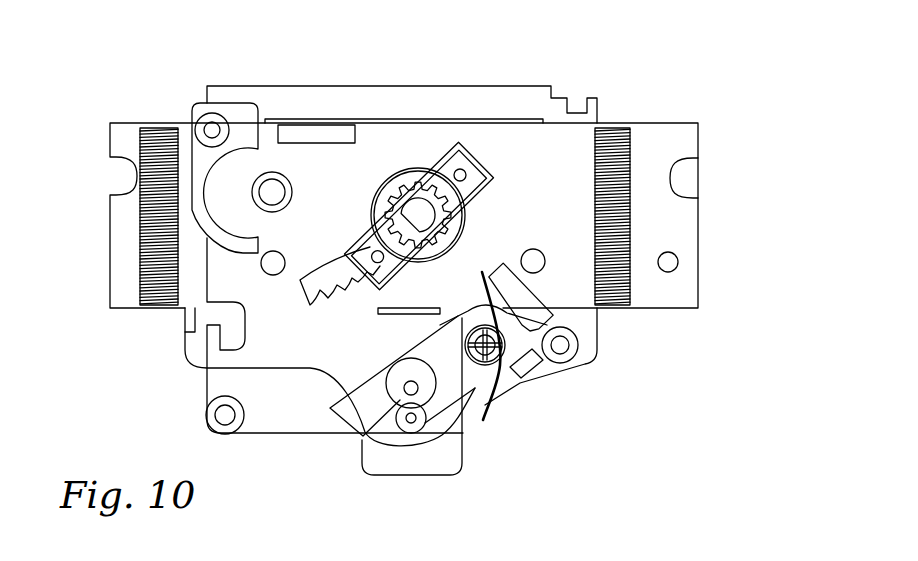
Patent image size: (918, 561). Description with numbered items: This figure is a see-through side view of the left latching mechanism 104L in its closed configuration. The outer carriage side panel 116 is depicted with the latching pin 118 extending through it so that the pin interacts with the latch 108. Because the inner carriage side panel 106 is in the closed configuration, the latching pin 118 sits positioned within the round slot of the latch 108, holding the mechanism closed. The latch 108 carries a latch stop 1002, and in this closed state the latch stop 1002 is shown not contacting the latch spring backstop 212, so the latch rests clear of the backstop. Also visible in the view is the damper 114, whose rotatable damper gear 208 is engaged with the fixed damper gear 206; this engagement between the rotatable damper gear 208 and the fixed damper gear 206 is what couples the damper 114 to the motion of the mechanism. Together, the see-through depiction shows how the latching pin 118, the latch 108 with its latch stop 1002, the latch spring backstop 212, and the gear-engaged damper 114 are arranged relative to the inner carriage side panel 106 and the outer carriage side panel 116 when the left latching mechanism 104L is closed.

The left latching mechanism 104L is at (675, 67).
The inner carriage side panel 106 is at (530, 93).
The latch 108 is at (343, 413).
The damper 114 is at (492, 213).
The outer carriage side panel 116 is at (698, 198).
The latching pin 118 is at (425, 420).
The fixed damper gear 206 is at (327, 280).
The rotatable damper gear 208 is at (417, 183).
The latch spring backstop 212 is at (527, 288).
The latch stop 1002 is at (538, 323).